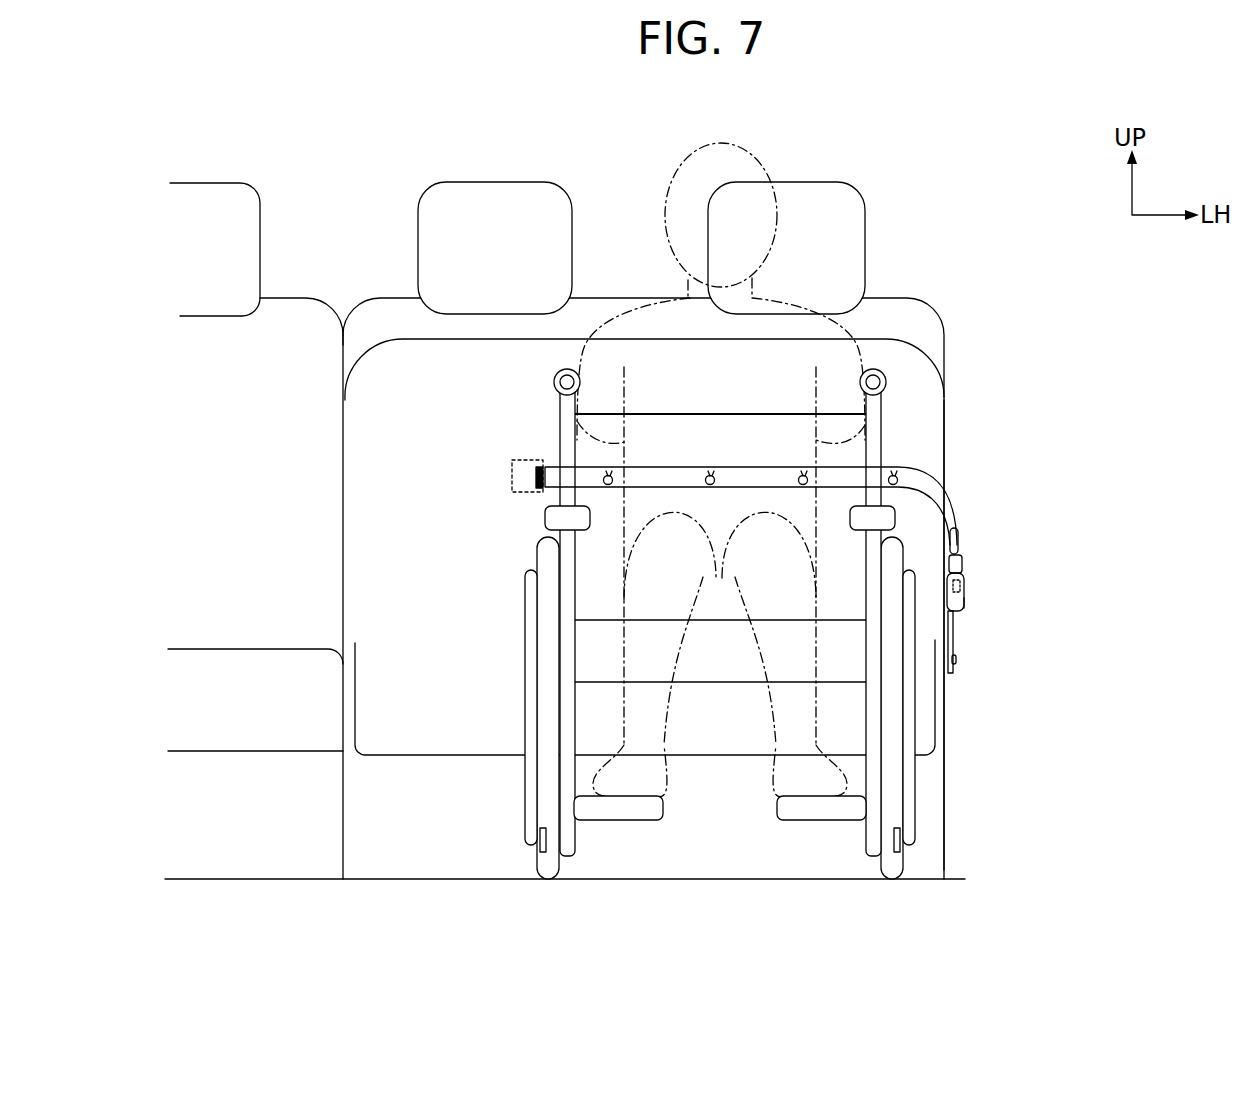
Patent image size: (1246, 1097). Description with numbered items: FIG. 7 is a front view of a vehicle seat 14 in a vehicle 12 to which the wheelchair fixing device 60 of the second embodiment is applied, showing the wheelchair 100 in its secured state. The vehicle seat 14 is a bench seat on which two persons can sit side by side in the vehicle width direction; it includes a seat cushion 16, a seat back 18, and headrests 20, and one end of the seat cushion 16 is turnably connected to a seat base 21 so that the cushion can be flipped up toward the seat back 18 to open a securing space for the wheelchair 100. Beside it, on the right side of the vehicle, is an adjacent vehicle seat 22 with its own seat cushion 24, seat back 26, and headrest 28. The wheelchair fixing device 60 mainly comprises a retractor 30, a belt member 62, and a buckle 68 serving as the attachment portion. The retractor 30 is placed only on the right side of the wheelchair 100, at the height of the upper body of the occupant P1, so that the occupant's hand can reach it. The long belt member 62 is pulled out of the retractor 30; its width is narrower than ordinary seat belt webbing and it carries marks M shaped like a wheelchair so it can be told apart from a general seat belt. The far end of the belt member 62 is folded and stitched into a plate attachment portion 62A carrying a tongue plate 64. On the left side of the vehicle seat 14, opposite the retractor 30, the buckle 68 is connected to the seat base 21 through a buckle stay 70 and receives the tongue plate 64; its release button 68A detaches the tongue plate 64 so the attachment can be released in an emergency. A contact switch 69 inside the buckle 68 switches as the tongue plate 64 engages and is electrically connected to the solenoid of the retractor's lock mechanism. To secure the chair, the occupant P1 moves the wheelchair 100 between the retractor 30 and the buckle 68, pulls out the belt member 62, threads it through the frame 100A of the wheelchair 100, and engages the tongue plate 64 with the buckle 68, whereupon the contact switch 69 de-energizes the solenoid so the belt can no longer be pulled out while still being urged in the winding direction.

The vehicle 12 is at (702, 507).
The vehicle seat 14 is at (931, 302).
The seat cushion 16 is at (904, 338).
The seat back 18 is at (946, 340).
The headrest 20 is at (419, 188).
The seat base 21 is at (946, 801).
The vehicle seat 22 is at (303, 299).
The seat cushion 24 is at (235, 647).
The seat back 26 is at (341, 322).
The headrest 28 is at (197, 181).
The retractor 30 is at (512, 478).
The wheelchair fixing device 60 is at (796, 539).
The belt member 62 is at (903, 463).
The plate attachment portion 62A is at (960, 542).
The tongue plate 64 is at (963, 560).
The buckle 68 is at (958, 658).
The release button 68A is at (964, 586).
The contact switch 69 is at (963, 604).
The buckle stay 70 is at (951, 646).
The wheelchair 100 is at (673, 413).
The frame 100A is at (577, 422).
The mark M is at (711, 476).
The occupant P1 is at (665, 182).